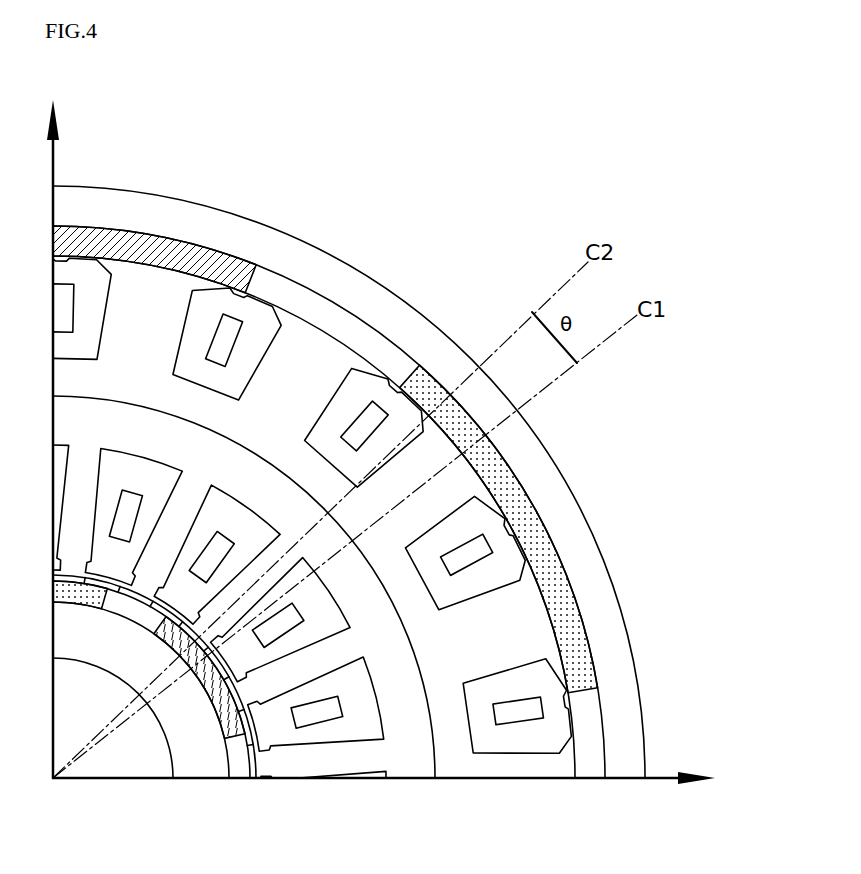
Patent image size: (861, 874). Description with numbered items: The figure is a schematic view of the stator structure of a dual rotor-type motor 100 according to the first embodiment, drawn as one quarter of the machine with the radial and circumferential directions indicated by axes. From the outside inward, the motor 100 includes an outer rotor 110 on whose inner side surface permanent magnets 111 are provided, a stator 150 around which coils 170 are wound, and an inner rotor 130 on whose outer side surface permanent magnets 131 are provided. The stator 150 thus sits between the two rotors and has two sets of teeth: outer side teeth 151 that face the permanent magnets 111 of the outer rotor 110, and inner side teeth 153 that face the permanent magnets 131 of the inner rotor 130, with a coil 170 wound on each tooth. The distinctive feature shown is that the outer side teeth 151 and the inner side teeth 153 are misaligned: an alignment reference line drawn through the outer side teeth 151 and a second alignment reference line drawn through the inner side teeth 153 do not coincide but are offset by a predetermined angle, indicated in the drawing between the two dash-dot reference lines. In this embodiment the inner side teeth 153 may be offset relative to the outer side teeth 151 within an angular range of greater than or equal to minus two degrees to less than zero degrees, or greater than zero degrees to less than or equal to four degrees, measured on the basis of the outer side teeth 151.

The dual rotor-type motor 100 is at (491, 104).
The outer rotor 110 is at (620, 667).
The permanent magnets 111 is at (590, 685).
The inner rotor 130 is at (200, 758).
The permanent magnets 131 is at (234, 728).
The stator 150 is at (389, 555).
The outer side teeth 151 is at (440, 497).
The inner side teeth 153 is at (227, 620).
The coils 170 is at (230, 335).